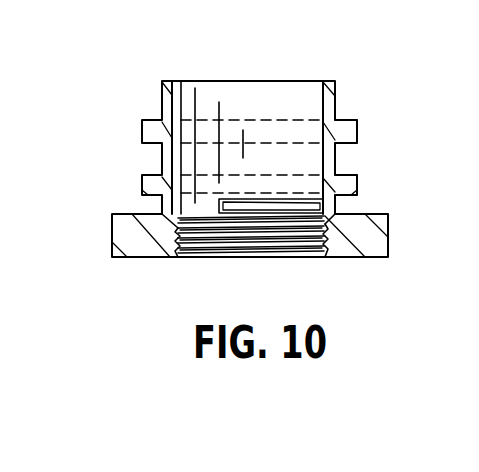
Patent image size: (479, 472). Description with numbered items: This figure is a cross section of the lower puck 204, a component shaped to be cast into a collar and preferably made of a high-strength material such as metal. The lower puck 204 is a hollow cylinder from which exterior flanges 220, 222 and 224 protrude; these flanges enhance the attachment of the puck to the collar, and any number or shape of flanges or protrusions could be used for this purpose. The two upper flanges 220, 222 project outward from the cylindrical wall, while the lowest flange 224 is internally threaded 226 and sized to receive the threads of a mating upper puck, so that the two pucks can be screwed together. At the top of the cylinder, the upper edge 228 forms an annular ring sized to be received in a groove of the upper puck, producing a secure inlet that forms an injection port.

The lower puck 204 is at (343, 68).
The exterior flange 220 is at (358, 129).
The exterior flange 222 is at (358, 184).
The lowest flange 224 is at (389, 242).
The internal threads 226 is at (202, 257).
The upper edge 228 is at (163, 81).